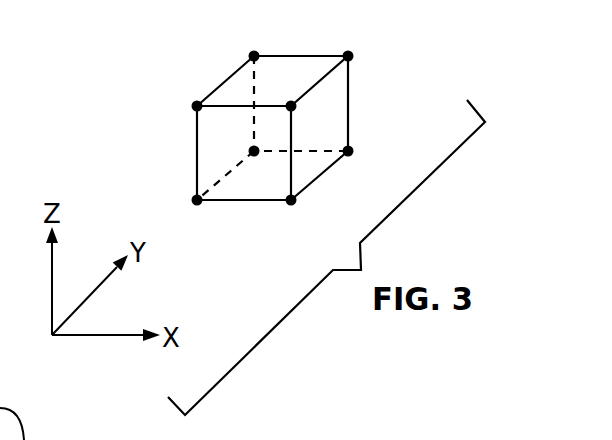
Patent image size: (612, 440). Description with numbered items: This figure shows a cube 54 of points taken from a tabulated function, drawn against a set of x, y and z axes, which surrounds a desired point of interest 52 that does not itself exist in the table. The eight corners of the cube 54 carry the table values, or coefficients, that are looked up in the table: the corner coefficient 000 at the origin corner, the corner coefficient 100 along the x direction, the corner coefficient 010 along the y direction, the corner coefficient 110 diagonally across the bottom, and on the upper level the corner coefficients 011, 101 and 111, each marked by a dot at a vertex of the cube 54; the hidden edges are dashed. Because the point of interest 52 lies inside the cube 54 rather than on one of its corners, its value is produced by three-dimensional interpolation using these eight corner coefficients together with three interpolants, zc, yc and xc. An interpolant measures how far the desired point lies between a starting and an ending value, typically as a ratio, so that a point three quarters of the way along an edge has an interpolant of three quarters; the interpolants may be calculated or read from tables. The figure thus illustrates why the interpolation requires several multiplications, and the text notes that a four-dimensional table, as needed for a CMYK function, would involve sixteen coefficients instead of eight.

The point of interest 52 is at (280, 80).
The cube 54 is at (350, 107).
The table value c000 000 is at (196, 216).
The table value c100 100 is at (292, 216).
The table value c010 010 is at (240, 136).
The table value c110 110 is at (378, 152).
The table value c011 011 is at (202, 72).
The table value c111 111 is at (377, 55).
The table value c101 101 is at (316, 118).